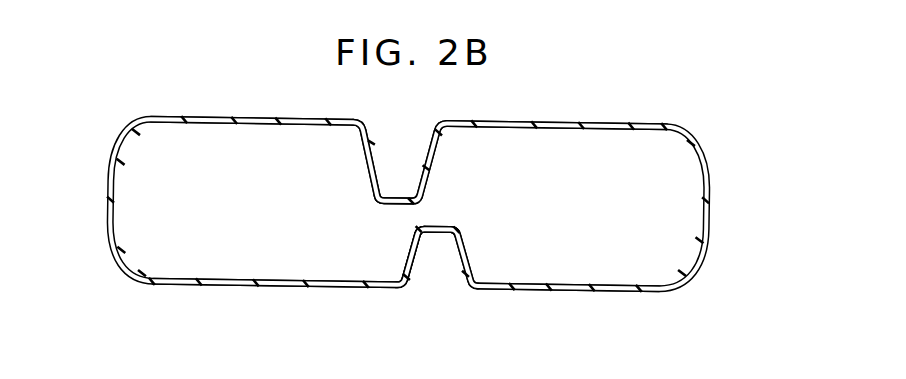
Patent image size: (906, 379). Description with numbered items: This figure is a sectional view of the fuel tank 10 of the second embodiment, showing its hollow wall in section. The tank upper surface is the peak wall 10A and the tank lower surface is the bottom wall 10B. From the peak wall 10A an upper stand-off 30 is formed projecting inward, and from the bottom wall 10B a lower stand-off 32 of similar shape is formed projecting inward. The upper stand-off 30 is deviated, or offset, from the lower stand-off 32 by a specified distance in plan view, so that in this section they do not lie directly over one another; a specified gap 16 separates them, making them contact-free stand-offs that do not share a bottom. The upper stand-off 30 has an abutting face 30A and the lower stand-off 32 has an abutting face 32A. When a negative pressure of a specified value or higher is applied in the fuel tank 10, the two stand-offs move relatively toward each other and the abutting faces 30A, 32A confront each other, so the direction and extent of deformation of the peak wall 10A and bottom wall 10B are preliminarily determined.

The fuel tank 10 is at (662, 96).
The peak wall 10A is at (580, 119).
The bottom wall 10B is at (578, 294).
The gap 16 is at (418, 222).
The upper stand-off 30 is at (358, 163).
The abutting face 30A is at (393, 206).
The lower stand-off 32 is at (475, 256).
The abutting face 32A is at (447, 227).